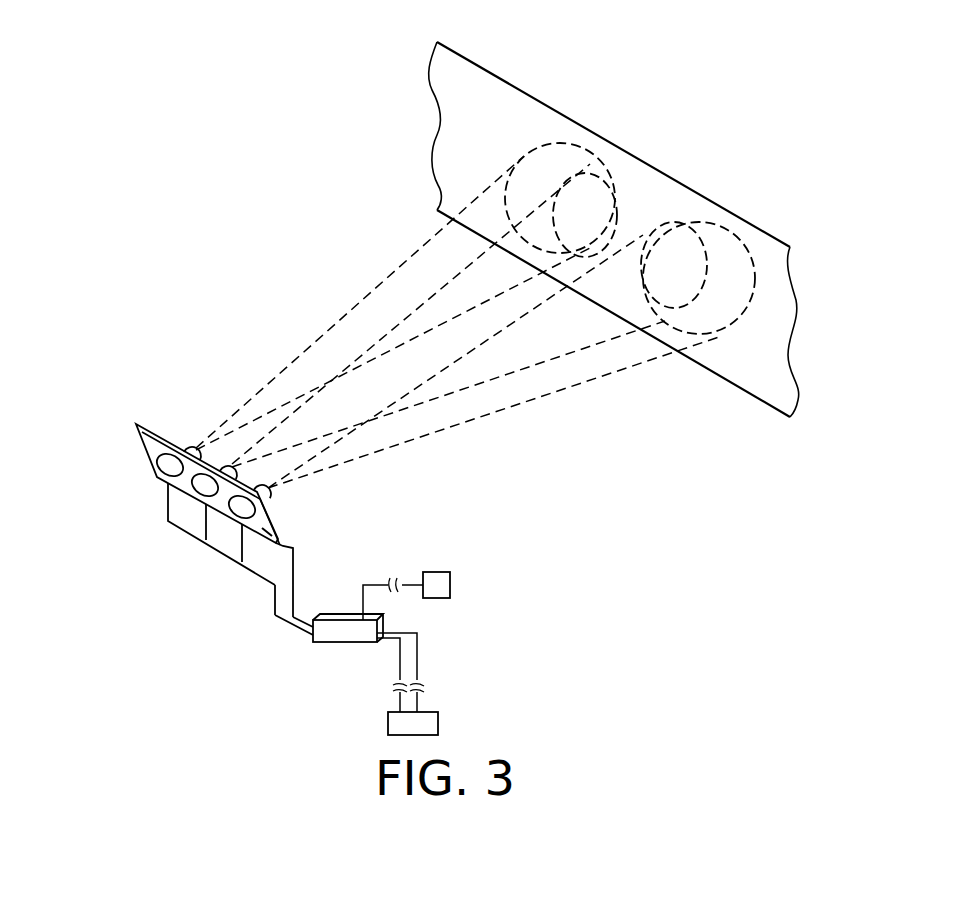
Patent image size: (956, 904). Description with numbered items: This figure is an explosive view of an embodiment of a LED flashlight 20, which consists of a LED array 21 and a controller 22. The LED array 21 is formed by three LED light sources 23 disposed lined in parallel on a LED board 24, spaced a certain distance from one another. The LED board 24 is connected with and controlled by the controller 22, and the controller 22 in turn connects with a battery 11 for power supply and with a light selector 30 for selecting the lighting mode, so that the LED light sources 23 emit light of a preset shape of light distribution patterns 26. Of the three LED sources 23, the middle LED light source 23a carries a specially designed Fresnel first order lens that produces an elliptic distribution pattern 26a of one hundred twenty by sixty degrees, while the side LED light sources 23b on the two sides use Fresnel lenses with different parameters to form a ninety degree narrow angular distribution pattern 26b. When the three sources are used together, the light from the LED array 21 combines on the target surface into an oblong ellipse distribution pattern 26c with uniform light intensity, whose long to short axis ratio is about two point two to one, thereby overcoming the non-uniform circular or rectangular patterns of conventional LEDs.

The battery 11 is at (430, 726).
The LED flashlight 20 is at (247, 506).
The LED array 21 is at (140, 426).
The controller 22 is at (338, 640).
The LED light source 23 is at (271, 422).
The middle LED light source 23a is at (246, 389).
The side LED light source 23b is at (189, 410).
The LED board 24 is at (160, 476).
The light distribution pattern 26 is at (656, 181).
The elliptic distribution pattern 26a is at (737, 236).
The narrow angular distribution pattern 26b is at (656, 181).
The oblong ellipse distribution pattern 26c is at (848, 138).
The light selector 30 is at (448, 583).